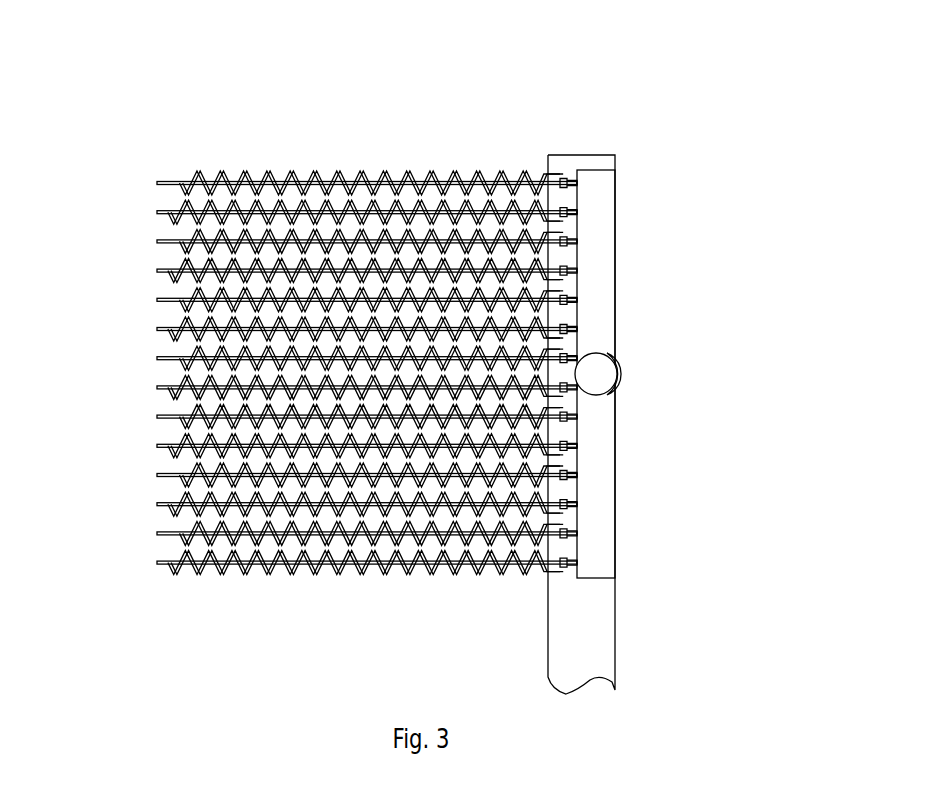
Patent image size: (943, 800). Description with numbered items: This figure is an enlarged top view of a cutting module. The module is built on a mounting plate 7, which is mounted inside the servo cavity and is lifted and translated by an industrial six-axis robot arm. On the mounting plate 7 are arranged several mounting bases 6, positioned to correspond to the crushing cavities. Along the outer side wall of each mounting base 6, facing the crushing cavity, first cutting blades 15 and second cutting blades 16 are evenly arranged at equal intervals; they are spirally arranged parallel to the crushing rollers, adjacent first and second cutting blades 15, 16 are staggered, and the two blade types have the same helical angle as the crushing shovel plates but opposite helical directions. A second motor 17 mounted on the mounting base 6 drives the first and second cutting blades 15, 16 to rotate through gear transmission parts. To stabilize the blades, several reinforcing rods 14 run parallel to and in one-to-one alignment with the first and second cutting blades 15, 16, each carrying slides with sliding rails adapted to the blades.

The reinforcing rod 14 is at (315, 292).
The first cutting blade 15 is at (310, 185).
The second cutting blade 16 is at (407, 172).
The mounting base 6 is at (598, 255).
The second motor 17 is at (607, 373).
The mounting plate 7 is at (580, 647).